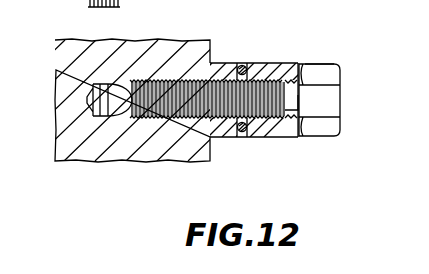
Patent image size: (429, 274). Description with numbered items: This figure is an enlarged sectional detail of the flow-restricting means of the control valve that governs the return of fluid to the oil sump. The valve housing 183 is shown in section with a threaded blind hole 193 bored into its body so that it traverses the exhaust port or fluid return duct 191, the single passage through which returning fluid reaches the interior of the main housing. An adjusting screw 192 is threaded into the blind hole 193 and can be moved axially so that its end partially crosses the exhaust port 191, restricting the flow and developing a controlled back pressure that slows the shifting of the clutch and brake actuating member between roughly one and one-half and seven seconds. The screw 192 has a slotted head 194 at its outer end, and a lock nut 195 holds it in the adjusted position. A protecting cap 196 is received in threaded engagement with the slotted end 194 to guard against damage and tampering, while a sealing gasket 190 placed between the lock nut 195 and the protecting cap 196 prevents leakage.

The valve housing 183 is at (157, 142).
The sealing element or gasket 190 is at (243, 132).
The exhaust port or fluid return duct 191 is at (125, 82).
The adjusting screw 192 is at (268, 118).
The blind hole 193 is at (90, 117).
The slotted head 194 is at (275, 97).
The lock nut 195 is at (228, 63).
The protecting cap 196 is at (330, 64).